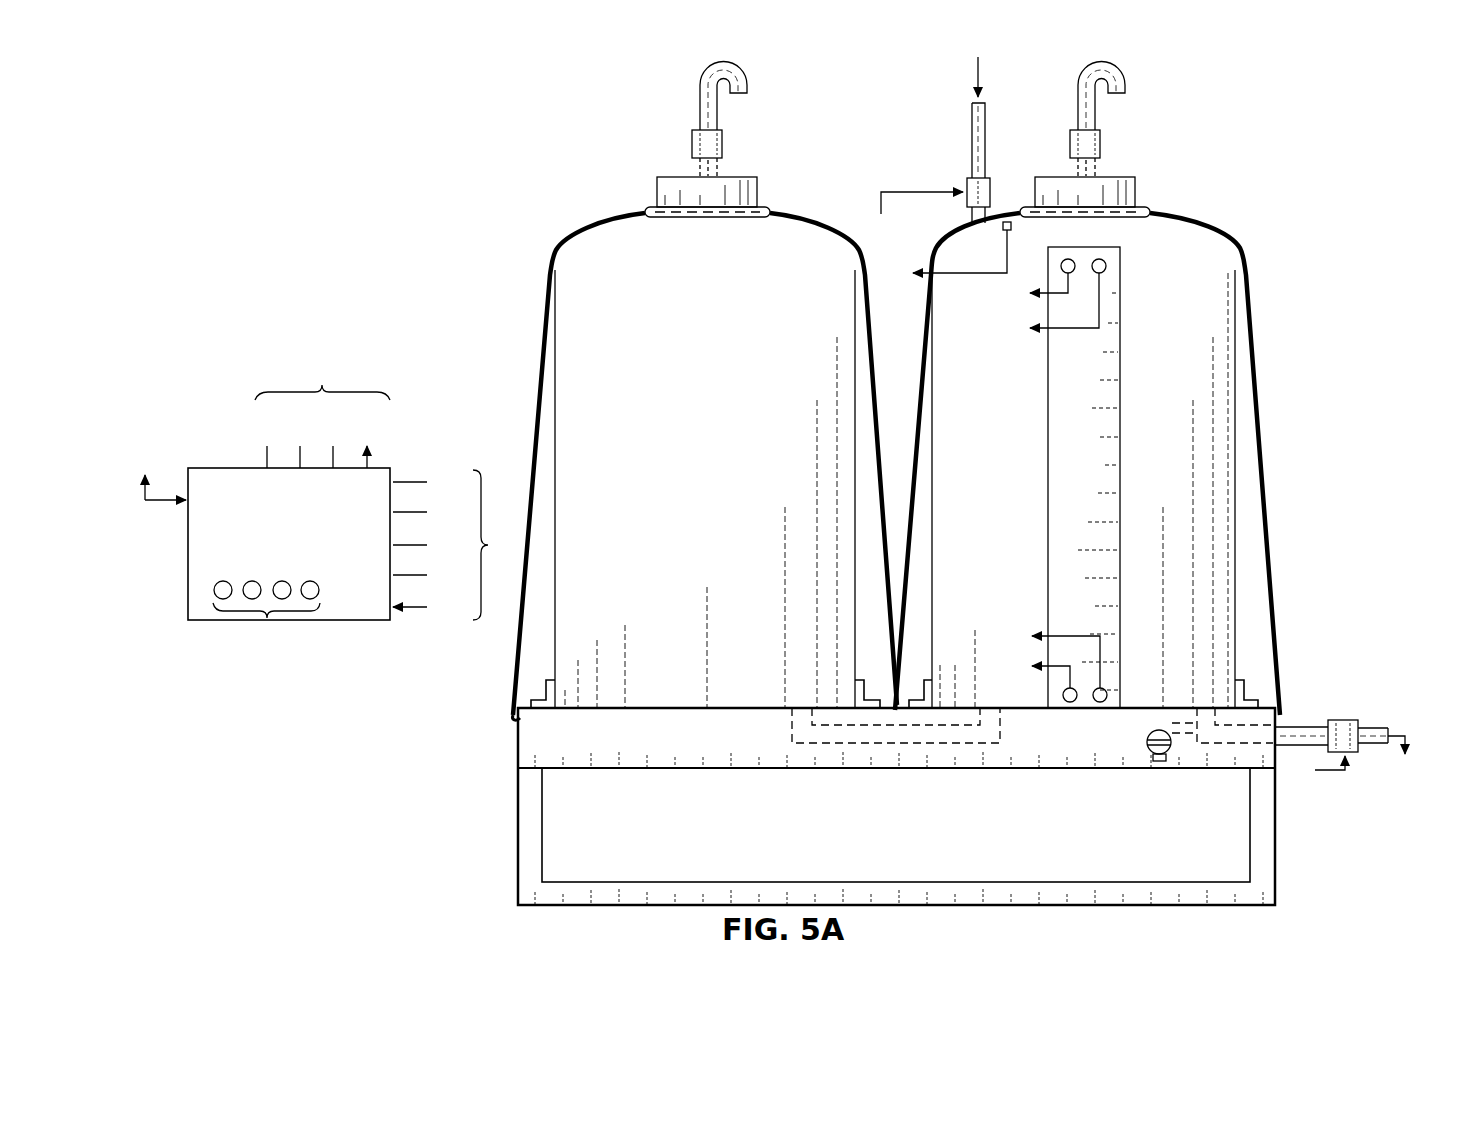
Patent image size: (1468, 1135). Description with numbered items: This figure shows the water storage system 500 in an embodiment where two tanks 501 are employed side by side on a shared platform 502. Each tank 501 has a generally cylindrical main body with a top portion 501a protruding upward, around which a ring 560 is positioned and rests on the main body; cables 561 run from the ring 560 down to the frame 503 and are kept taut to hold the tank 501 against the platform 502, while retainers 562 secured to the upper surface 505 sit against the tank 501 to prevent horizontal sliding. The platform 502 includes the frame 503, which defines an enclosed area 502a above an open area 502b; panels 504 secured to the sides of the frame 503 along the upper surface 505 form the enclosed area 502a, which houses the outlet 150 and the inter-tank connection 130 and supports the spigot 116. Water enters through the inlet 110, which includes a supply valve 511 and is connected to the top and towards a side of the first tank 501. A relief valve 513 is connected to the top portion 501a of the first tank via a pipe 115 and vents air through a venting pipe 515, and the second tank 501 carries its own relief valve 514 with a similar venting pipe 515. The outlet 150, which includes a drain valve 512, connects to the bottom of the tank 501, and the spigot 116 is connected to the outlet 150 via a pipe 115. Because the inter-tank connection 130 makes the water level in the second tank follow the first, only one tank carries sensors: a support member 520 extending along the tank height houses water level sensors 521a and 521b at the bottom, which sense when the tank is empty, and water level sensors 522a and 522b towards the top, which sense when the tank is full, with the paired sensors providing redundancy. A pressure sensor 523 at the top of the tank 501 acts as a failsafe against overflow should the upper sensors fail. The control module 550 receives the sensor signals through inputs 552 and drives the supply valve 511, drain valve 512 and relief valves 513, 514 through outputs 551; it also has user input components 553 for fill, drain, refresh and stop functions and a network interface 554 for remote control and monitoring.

The water storage system 500 is at (1286, 92).
The tank 501 is at (900, 464).
The top portion 501a is at (758, 185).
The platform 502 is at (902, 806).
The enclosed area 502a is at (538, 738).
The open area 502b is at (846, 819).
The frame 503 is at (1278, 867).
The panel 504 is at (667, 757).
The upper surface 505 is at (513, 699).
The supply valve 511 is at (964, 186).
The drain valve 512 is at (1350, 720).
The relief valve 513 is at (1100, 143).
The relief valve 514 is at (722, 143).
The venting pipe 515 is at (745, 92).
The support member 520 is at (1121, 387).
The water level sensor 521a is at (1070, 702).
The water level sensor 521b is at (1105, 690).
The water level sensor 522a is at (1073, 272).
The water level sensor 522b is at (1106, 262).
The pressure sensor 523 is at (1012, 226).
The control module 550 is at (354, 499).
The outputs 551 is at (323, 386).
The inputs 552 is at (490, 545).
The user input components 553 is at (267, 619).
The network interface 554 is at (186, 510).
The ring 560 is at (770, 212).
The cable 561 is at (542, 378).
The retainer 562 is at (542, 690).
The inlet 110 is at (958, 130).
The pipe 115 is at (698, 175).
The spigot 116 is at (1160, 762).
The inter-tank connection 130 is at (905, 745).
The outlet 150 is at (1226, 747).